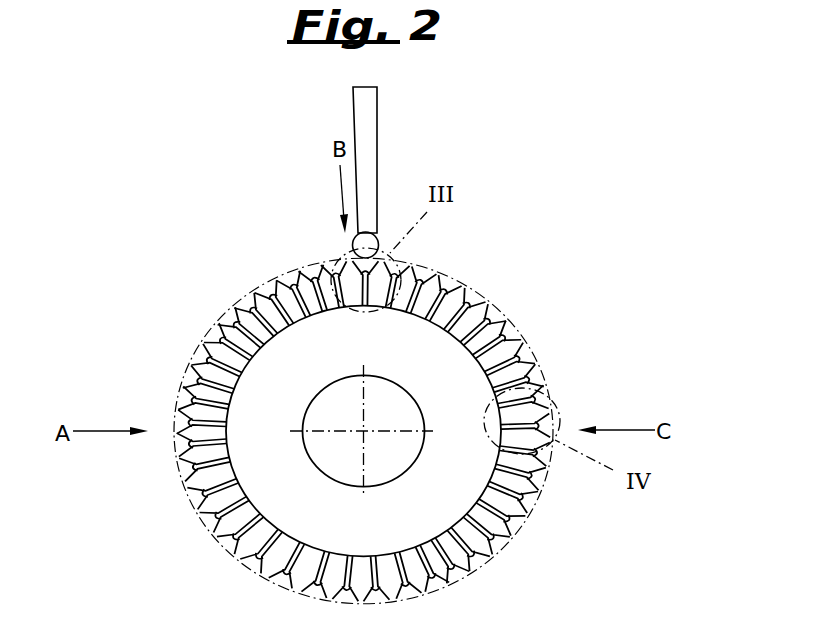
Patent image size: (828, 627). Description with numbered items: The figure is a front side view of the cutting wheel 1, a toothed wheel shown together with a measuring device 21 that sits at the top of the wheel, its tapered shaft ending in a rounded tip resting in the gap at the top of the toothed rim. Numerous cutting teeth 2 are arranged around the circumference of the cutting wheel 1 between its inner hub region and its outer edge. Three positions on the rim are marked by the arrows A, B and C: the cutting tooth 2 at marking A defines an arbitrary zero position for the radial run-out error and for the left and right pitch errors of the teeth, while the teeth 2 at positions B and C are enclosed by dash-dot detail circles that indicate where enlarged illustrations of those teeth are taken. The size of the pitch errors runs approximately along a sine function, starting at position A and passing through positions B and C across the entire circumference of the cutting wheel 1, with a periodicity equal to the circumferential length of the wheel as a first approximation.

The cutting wheel 1 is at (508, 294).
The cutting tooth 2 is at (342, 262).
The measuring device 21 is at (368, 142).